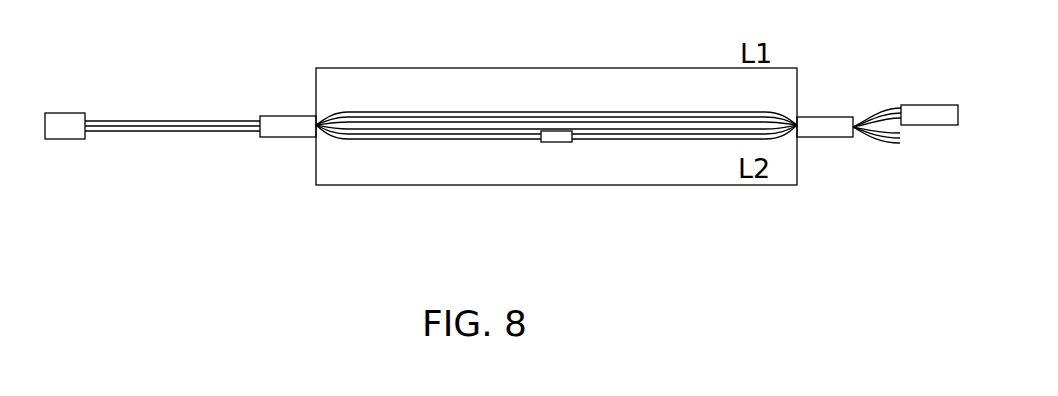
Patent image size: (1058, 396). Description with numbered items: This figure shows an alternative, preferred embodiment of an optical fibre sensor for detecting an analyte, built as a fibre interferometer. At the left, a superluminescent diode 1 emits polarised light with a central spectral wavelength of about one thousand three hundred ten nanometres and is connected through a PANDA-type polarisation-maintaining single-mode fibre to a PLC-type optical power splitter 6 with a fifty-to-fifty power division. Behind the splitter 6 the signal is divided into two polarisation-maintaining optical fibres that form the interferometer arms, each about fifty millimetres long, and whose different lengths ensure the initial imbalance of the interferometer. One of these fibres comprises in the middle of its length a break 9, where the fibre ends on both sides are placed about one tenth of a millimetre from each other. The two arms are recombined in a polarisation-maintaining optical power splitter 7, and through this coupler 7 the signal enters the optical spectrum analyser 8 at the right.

The superluminescent diode 1 is at (64, 113).
The PLC-type optical power splitter 6 is at (282, 116).
The optical power splitter maintaining the polarity 7 is at (825, 117).
The optical spectrum analyser 8 is at (930, 105).
The break 9 is at (556, 142).